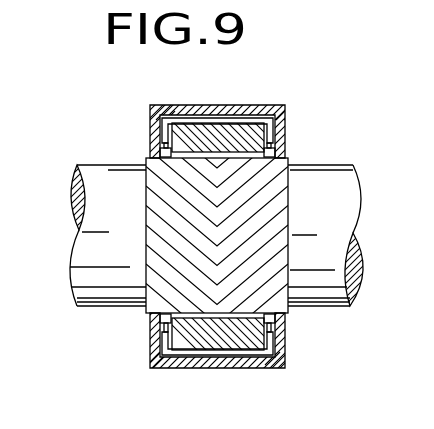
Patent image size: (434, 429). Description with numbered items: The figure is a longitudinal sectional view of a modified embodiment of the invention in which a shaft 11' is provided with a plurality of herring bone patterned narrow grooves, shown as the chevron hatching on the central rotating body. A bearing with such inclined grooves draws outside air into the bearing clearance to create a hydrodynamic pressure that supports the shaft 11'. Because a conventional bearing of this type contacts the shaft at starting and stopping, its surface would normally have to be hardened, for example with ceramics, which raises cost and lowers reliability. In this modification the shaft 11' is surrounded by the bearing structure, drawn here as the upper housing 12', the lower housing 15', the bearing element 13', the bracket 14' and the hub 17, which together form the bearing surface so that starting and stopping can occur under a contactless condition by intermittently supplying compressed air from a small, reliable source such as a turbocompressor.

The shaft 11' is at (247, 140).
The housing (upper) 12' is at (236, 130).
The bearing 13' is at (296, 334).
The coil bobbin / bracket 14' is at (244, 350).
The housing (lower) 15' is at (222, 353).
The hub / rotor body 17 is at (144, 281).